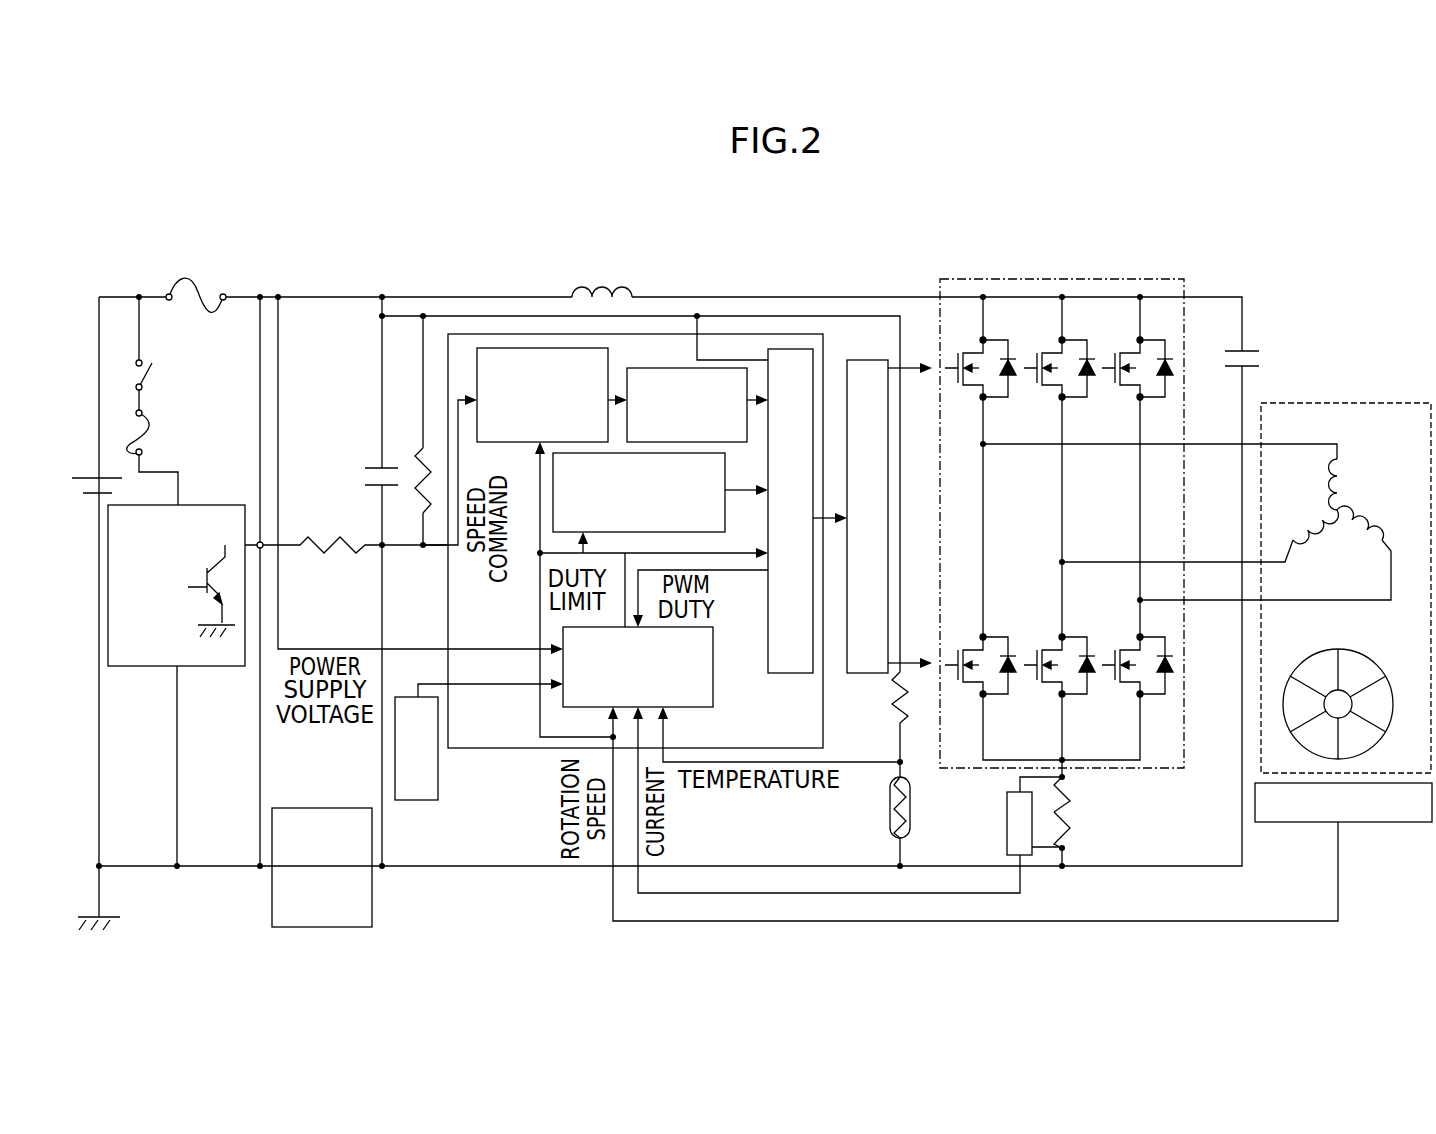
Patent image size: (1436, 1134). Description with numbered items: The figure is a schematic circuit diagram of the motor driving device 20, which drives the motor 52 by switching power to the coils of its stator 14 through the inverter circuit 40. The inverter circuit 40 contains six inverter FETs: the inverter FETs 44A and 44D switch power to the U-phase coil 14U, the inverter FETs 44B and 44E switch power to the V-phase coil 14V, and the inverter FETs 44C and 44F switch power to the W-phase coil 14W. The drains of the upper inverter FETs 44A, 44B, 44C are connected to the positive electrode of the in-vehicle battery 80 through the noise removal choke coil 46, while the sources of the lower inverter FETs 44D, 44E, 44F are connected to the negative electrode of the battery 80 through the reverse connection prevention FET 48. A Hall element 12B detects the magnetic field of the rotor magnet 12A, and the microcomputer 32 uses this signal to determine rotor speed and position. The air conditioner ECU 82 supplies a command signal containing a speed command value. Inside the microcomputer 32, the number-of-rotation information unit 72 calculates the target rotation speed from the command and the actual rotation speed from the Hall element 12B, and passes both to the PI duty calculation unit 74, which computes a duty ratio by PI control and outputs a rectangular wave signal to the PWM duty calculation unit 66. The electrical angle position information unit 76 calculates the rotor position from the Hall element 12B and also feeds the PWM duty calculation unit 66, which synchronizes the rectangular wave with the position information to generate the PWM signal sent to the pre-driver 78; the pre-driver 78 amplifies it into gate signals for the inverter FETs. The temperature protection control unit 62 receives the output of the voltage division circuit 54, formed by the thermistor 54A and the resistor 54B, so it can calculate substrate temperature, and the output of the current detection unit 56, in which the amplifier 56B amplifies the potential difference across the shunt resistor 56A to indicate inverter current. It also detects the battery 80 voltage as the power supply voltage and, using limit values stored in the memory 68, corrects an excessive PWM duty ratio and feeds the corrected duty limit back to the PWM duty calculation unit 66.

The motor driving device 20 is at (1291, 211).
The noise removal choke coil 46 is at (606, 279).
The inverter circuit 40 is at (1089, 493).
The motor 52 is at (1346, 550).
The stator 14 is at (1361, 495).
The U-phase coil 14U is at (1345, 470).
The V-phase coil 14V is at (1318, 538).
The W-phase coil 14W is at (1384, 545).
The rotor magnet 12A is at (1372, 658).
The Hall element 12B is at (1364, 823).
The in-vehicle battery 80 is at (79, 470).
The air conditioner ECU 82 is at (205, 505).
The reverse connection prevention FET 48 is at (318, 808).
The memory 68 is at (438, 800).
The microcomputer 32 is at (635, 585).
The temperature protection control unit 62 is at (626, 682).
The PWM duty calculation unit 66 is at (778, 673).
The number-of-rotation information unit 72 is at (522, 442).
The PI duty calculation unit 74 is at (670, 368).
The electrical angle position information unit 76 is at (727, 470).
The pre-driver 78 is at (866, 675).
The voltage division circuit 54 is at (899, 769).
The thermistor 54A is at (910, 805).
The resistor 54B is at (912, 718).
The current detection unit 56 is at (1102, 780).
The shunt resistor 56A is at (1073, 803).
The amplifier 56B is at (1065, 827).
The inverter FET 44A is at (1020, 388).
The inverter FET 44B is at (1099, 389).
The inverter FET 44C is at (1177, 389).
The inverter FET 44D is at (1020, 688).
The inverter FET 44E is at (1099, 689).
The inverter FET 44F is at (1177, 690).